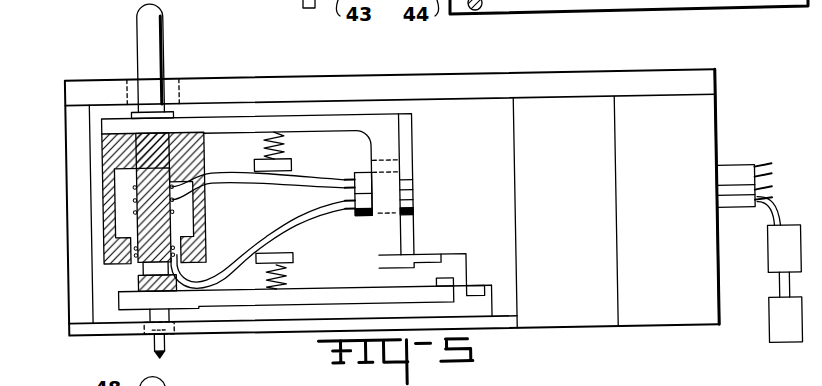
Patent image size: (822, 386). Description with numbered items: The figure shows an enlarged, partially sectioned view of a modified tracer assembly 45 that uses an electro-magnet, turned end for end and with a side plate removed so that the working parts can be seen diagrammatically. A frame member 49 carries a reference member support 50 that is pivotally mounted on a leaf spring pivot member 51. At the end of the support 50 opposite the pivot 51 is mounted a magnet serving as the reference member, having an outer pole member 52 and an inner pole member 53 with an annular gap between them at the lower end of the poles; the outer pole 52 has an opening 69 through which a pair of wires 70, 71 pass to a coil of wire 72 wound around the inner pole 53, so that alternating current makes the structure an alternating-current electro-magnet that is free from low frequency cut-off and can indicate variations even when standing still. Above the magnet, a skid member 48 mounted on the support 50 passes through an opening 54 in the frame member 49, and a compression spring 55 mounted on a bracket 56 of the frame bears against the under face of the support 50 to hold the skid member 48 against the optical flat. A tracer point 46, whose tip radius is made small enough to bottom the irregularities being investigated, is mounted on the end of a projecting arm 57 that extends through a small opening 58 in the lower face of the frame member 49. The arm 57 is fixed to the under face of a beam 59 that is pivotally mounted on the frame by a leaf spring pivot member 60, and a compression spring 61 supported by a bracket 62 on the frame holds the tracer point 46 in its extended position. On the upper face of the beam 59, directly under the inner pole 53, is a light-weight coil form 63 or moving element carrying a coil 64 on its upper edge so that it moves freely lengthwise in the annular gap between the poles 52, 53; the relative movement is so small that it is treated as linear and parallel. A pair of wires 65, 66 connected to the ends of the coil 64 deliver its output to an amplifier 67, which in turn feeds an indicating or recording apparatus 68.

The tracer assembly 45 is at (558, 76).
The frame member 49 is at (625, 89).
The skid member 48 is at (163, 16).
The opening 54 is at (172, 89).
The reference member support 50 is at (392, 137).
The inner pole member 53 is at (112, 144).
The outer pole member 52 is at (103, 171).
The coil of wire 72 is at (132, 196).
The coil 64 is at (133, 249).
The coil form 63 is at (137, 280).
The compression spring 55 is at (283, 139).
The bracket 56 is at (292, 162).
The wire 71 is at (329, 187).
The wire 70 is at (223, 160).
The opening 69 is at (205, 173).
The wire 66 is at (280, 226).
The wire 65 is at (277, 232).
The bracket 62 is at (293, 251).
The compression spring 61 is at (286, 276).
The beam 59 is at (377, 287).
The leaf spring pivot member 51 is at (412, 256).
The leaf spring pivot member 60 is at (462, 282).
The projecting arm 57 is at (148, 337).
The small opening 58 is at (165, 329).
The tracer point 46 is at (158, 354).
The amplifier 67 is at (778, 254).
The indicating or recording apparatus 68 is at (782, 327).